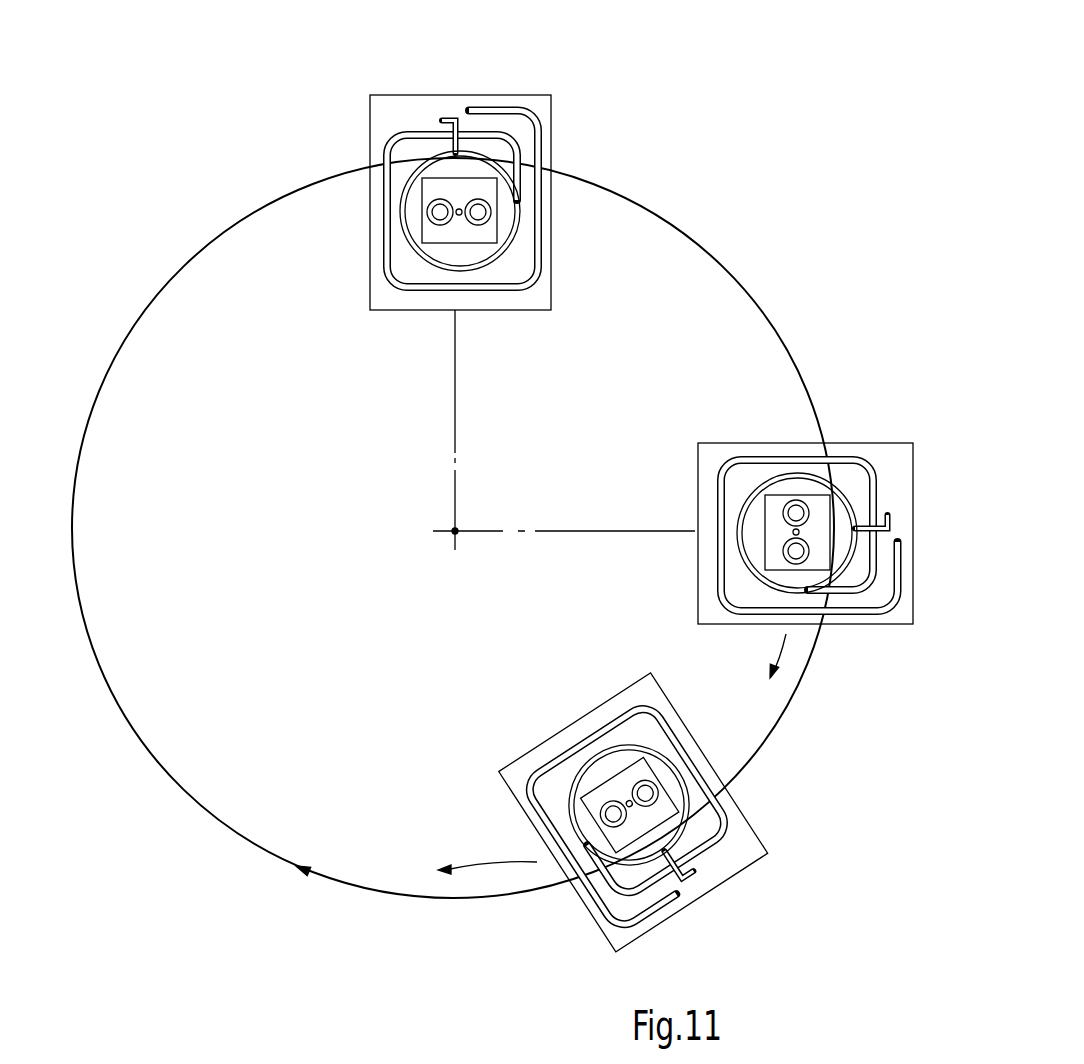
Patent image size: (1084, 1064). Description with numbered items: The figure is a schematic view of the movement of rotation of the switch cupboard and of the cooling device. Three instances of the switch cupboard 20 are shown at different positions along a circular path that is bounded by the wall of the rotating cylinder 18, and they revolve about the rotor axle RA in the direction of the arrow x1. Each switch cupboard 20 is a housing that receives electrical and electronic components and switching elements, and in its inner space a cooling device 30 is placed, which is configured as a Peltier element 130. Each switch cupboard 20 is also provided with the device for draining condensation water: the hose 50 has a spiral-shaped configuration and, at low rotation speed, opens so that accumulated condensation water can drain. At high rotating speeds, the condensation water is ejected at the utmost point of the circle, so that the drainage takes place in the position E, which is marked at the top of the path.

The wall of the rotating cylinder 18 is at (678, 234).
The switch cupboard 20 is at (366, 227).
The cooling device 30 is at (413, 220).
The hose 50 is at (540, 158).
The Peltier element 130 is at (458, 190).
The rotor axle RA is at (453, 533).
The position E is at (542, 364).
The arrow X1 x1 is at (493, 872).